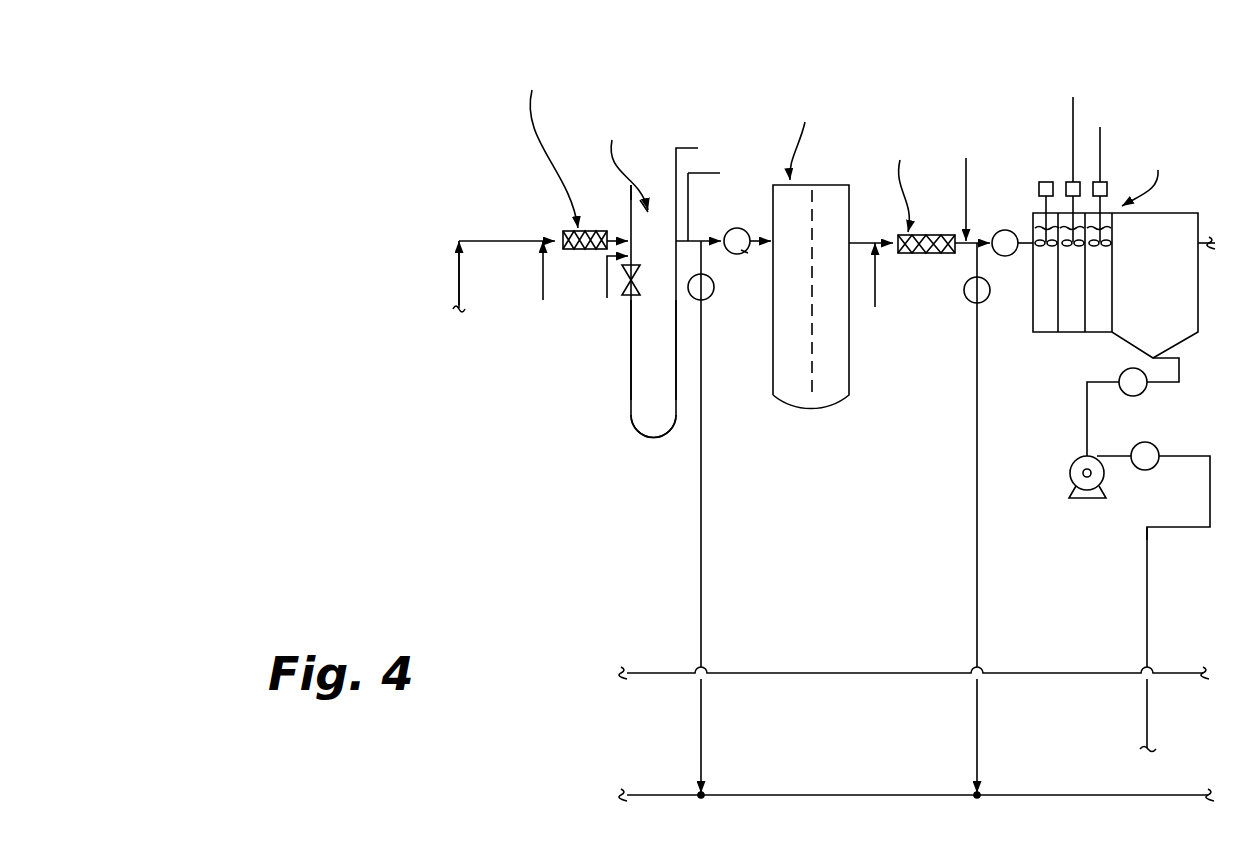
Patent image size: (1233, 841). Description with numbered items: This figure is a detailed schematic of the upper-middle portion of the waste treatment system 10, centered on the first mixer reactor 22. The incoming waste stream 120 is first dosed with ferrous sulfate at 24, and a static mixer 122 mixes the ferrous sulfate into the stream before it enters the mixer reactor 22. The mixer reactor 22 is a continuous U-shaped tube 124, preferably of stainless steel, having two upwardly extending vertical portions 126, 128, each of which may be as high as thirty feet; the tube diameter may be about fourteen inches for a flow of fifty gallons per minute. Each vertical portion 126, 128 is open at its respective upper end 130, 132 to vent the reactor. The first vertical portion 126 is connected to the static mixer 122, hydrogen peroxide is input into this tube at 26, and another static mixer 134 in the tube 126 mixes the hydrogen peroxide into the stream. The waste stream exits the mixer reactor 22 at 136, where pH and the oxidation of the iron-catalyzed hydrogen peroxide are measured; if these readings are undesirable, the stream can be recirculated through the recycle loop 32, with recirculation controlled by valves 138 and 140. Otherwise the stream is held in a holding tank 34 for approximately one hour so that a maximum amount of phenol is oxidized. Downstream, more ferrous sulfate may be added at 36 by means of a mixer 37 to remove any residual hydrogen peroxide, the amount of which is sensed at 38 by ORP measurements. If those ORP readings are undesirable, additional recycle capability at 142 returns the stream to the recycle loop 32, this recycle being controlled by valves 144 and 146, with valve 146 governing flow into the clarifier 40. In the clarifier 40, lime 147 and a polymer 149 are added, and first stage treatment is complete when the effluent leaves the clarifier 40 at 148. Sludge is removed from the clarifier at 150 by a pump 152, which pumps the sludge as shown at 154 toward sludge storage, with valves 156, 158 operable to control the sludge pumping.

The wastewater treatment system 10 is at (310, 245).
The wastewater inlet line 120 is at (459, 270).
The ferrous sulfate addition point 24 is at (543, 273).
The static mixer 122 is at (560, 236).
The hydrogen peroxide input 26 is at (607, 290).
The static mixer 134 is at (646, 285).
The first mixer reactor 22 is at (628, 437).
The upper end 130 is at (631, 185).
The upper end 132 is at (657, 183).
The U-shaped tube 124 is at (657, 438).
The vertical portion 126 is at (630, 378).
The vertical portion 128 is at (676, 390).
The mixer reactor exit 136 is at (723, 232).
The valve 140 is at (744, 254).
The valve 138 is at (710, 302).
The recycle loop 32 is at (703, 598).
The holding tank 34 is at (820, 407).
The ferrous sulfate addition point 36 is at (875, 277).
The mixer 37 is at (923, 234).
The ORP measurement point 38 is at (966, 190).
The valve 146 is at (1012, 222).
The additional recycle 142 is at (977, 520).
The valve 144 is at (970, 305).
The clarifier 40 is at (1129, 207).
The lime 147 is at (1080, 97).
The polymer 149 is at (1106, 127).
The clarifier effluent outlet 148 is at (1210, 236).
The valve 156 is at (1145, 388).
The sludge removal point 150 is at (1088, 418).
The pump 152 is at (1070, 472).
The valve 158 is at (1155, 455).
The sludge pumping line 154 is at (1148, 605).